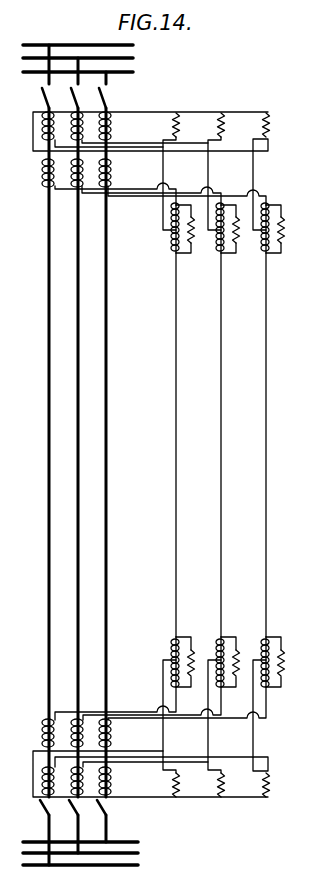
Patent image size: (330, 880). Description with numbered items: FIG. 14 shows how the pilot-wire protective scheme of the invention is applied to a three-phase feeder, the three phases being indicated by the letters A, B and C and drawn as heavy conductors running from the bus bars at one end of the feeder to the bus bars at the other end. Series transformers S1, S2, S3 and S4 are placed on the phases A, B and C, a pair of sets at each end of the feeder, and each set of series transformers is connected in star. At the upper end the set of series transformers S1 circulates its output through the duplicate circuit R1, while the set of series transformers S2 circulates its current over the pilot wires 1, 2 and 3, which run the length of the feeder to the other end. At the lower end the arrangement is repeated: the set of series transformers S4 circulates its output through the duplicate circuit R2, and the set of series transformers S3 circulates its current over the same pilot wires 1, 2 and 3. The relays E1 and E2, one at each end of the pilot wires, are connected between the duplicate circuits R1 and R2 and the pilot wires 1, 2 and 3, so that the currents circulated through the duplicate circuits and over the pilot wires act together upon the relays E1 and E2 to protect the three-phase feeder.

The phase A is at (48, 428).
The phase B is at (77, 462).
The phase C is at (105, 497).
The pilot wire 1 is at (175, 465).
The pilot wire 2 is at (220, 497).
The pilot wire 3 is at (267, 500).
The series transformer S1 is at (112, 124).
The series transformer S2 is at (111, 180).
The series transformer S3 is at (113, 741).
The series transformer S4 is at (112, 785).
The duplicate circuit R1 is at (266, 116).
The duplicate circuit R2 is at (266, 795).
The relay E1 is at (266, 247).
The relay E2 is at (266, 642).